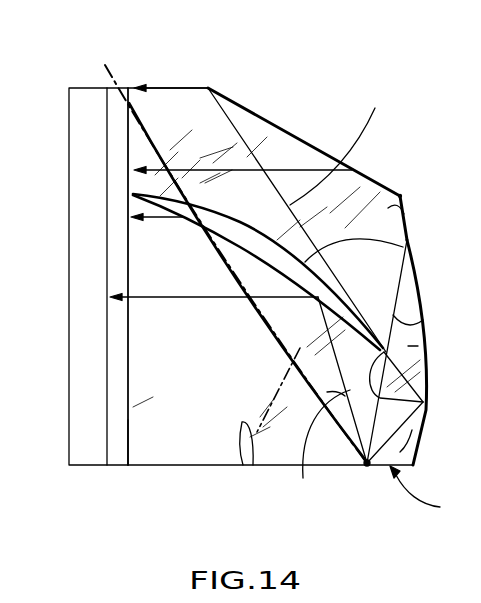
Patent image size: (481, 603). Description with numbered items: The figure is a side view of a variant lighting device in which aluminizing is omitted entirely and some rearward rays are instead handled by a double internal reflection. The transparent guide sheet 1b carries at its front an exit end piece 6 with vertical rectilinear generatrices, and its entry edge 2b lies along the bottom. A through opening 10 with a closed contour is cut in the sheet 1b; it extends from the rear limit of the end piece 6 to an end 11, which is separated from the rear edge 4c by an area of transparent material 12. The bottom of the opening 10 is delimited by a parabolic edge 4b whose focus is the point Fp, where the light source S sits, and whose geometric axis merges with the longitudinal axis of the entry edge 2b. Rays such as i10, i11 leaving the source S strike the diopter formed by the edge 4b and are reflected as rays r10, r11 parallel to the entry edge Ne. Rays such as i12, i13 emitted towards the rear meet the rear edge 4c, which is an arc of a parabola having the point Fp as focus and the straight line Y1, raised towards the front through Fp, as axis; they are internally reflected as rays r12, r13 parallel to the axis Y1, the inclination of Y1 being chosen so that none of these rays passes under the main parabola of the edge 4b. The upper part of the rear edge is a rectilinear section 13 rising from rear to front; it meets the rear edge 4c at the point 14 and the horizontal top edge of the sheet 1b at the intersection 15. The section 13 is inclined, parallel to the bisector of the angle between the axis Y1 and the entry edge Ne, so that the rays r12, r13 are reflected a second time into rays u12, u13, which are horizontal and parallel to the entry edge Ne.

The exit end piece 6 is at (69, 357).
The guide sheet 1b is at (160, 423).
The entry edge 2b is at (188, 467).
The intersection of section 13 with top edge 15 is at (208, 88).
The rectilinear section 13 is at (317, 148).
The intersection of rear edge 4c and section 13 14 is at (400, 193).
The reflected ray r13 is at (392, 207).
The rear edge 4c is at (418, 281).
The reflected ray u12 is at (172, 88).
The reflected ray u13 is at (280, 170).
The reflected ray r11 is at (160, 218).
The reflected ray r10 is at (197, 297).
The parabolic edge 4b is at (246, 244).
The axis Y1 is at (110, 64).
The emitted light ray i11 is at (282, 342).
The reflected ray r12 is at (350, 149).
The through opening 10 is at (403, 247).
The emitted light ray i13 is at (421, 319).
The area of transparent material 12 is at (408, 346).
The end of opening 11 is at (423, 402).
The emitted light ray i12 is at (417, 440).
The emitted light ray i10 is at (312, 454).
The light source S is at (368, 467).
The focus point Fp is at (366, 467).
The entry edge direction Ne is at (430, 494).